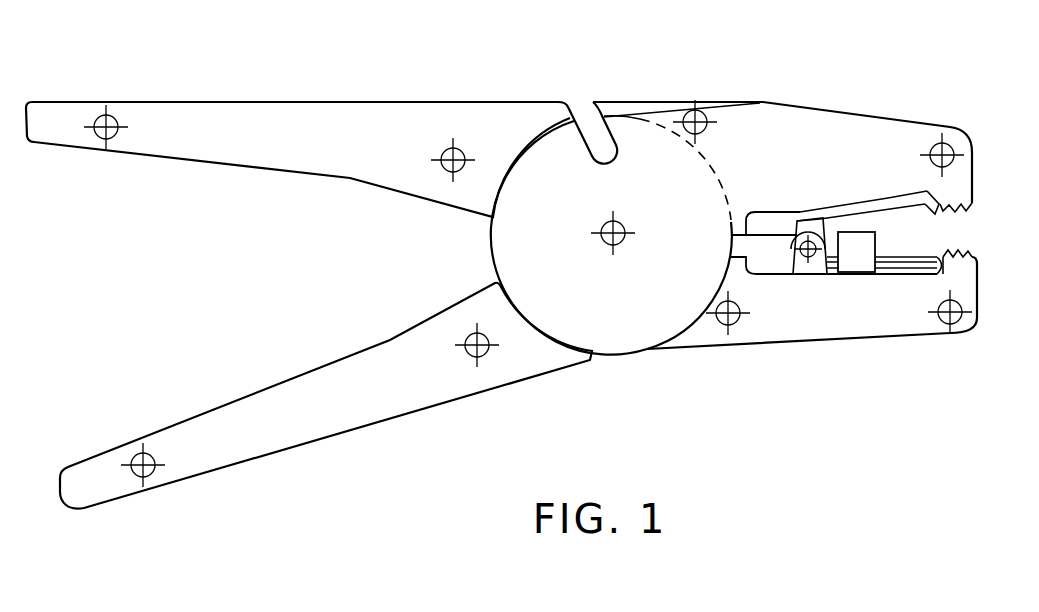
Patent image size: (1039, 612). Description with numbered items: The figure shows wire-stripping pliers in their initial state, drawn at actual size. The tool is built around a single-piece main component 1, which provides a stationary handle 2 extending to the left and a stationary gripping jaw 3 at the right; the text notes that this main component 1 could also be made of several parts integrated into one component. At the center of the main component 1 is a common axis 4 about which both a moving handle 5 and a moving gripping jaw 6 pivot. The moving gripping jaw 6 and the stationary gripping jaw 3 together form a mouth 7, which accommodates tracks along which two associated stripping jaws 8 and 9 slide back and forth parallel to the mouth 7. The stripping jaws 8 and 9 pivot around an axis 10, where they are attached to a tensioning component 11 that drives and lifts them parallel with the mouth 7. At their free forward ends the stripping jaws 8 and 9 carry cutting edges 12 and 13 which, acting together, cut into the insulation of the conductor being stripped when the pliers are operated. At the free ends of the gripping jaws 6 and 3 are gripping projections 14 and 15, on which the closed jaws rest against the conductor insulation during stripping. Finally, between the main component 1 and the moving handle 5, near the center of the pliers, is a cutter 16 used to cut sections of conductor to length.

The main component 1 is at (485, 95).
The stationary handle 2 is at (349, 122).
The stationary gripping jaw 3 is at (857, 327).
The common axis 4 is at (612, 230).
The moving handle 5 is at (394, 400).
The moving gripping jaw 6 is at (780, 125).
The mouth 7 is at (948, 236).
The stripping jaw 8 is at (858, 194).
The stripping jaw 9 is at (906, 264).
The axis 10 is at (808, 262).
The tensioning component 11 is at (771, 245).
The cutting edge 12 is at (937, 192).
The cutting edge 13 is at (975, 290).
The gripping projection 14 is at (973, 205).
The gripping projection 15 is at (972, 262).
The cutter 16 is at (584, 108).